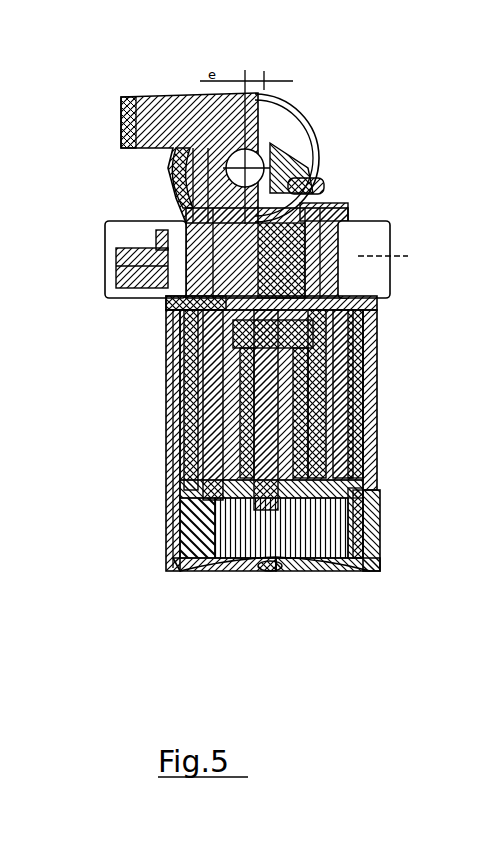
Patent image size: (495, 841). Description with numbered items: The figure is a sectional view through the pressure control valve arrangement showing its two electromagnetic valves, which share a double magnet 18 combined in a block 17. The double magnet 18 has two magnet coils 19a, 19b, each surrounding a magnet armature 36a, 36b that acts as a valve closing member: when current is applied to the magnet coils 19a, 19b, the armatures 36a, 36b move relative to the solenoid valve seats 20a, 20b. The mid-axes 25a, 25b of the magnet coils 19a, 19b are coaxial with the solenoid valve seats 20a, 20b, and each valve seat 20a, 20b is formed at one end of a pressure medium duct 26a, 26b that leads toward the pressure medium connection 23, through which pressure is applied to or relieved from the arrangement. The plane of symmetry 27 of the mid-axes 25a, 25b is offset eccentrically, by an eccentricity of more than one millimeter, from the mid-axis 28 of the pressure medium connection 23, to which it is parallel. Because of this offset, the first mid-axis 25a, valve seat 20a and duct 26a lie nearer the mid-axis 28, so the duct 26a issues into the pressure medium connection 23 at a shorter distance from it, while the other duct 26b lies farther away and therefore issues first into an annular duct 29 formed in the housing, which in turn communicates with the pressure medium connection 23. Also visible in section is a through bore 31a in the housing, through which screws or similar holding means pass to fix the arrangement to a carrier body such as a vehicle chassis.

The block 17 is at (371, 316).
The double magnet 18 is at (376, 350).
The magnet coil 19a is at (160, 422).
The magnet coil 19b is at (372, 382).
The solenoid valve seat 20a is at (160, 296).
The solenoid valve seat 20b is at (373, 500).
The pressure medium connection 23 is at (276, 145).
The mid-axis 25a is at (212, 560).
The mid-axis 25b is at (312, 555).
The pressure medium duct 26a is at (180, 220).
The pressure medium duct 26b is at (372, 538).
The plane of symmetry 27 is at (262, 563).
The mid-axis 28 is at (306, 188).
The annular duct 29 is at (100, 242).
The through bore 31a is at (388, 230).
The magnet armature 36a is at (158, 385).
The magnet armature 36b is at (370, 416).